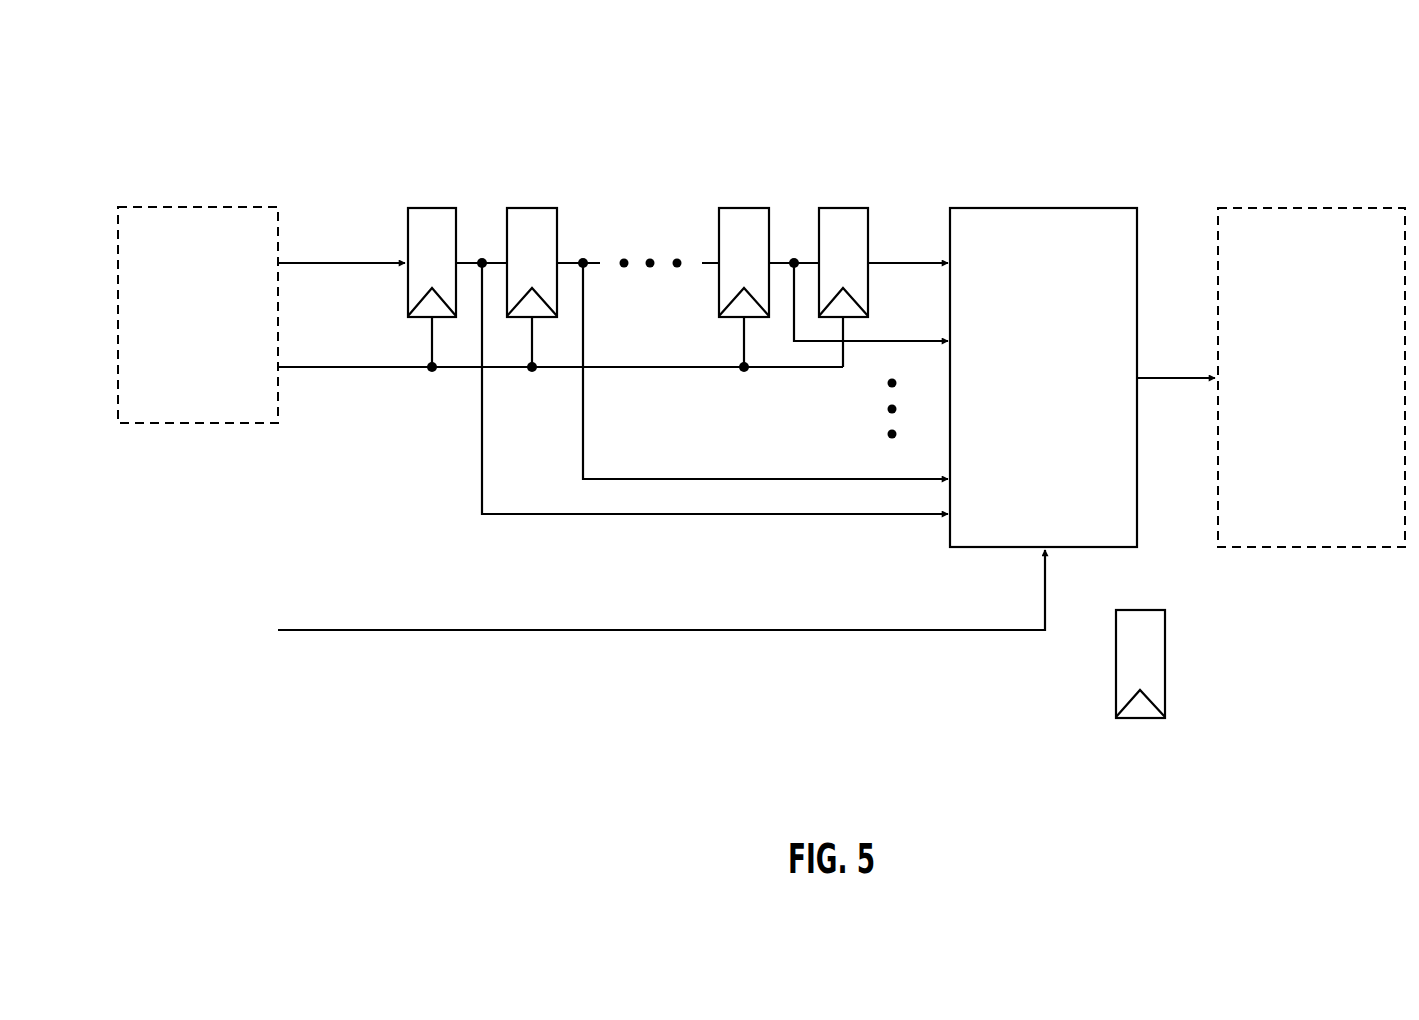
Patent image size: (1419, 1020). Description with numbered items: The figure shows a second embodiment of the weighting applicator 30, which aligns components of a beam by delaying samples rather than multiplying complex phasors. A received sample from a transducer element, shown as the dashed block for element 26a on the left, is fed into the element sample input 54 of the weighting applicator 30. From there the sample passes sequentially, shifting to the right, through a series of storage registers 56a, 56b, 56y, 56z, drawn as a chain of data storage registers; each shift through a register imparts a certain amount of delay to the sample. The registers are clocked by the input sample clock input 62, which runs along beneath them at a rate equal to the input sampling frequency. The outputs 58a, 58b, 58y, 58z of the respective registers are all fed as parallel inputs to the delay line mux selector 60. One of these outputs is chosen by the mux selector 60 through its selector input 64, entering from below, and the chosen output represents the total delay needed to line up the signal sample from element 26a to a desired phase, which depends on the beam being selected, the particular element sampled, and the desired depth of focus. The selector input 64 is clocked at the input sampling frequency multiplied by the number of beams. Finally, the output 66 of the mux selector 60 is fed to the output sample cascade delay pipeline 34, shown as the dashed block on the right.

The weighting applicator 30 is at (348, 50).
The element 26a is at (197, 207).
The output sample cascade delay pipeline 34 is at (1338, 207).
The element sample input 54 is at (358, 261).
The storage register 56a is at (433, 207).
The storage register 56b is at (532, 207).
The storage register 56y is at (744, 207).
The storage register 56z is at (845, 207).
The output 58a is at (563, 516).
The output 58b is at (738, 478).
The output 58y is at (876, 344).
The output 58z is at (893, 261).
The delay line mux selector 60 is at (1073, 207).
The input sample clock input 62 is at (358, 369).
The selector input 64 is at (342, 632).
The output 66 is at (1149, 377).